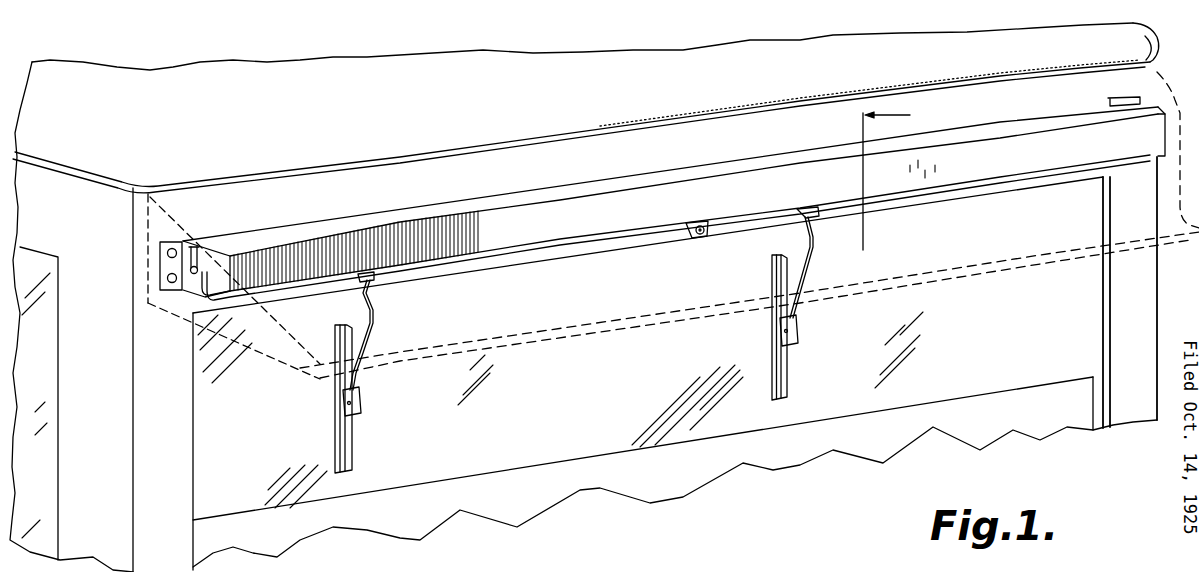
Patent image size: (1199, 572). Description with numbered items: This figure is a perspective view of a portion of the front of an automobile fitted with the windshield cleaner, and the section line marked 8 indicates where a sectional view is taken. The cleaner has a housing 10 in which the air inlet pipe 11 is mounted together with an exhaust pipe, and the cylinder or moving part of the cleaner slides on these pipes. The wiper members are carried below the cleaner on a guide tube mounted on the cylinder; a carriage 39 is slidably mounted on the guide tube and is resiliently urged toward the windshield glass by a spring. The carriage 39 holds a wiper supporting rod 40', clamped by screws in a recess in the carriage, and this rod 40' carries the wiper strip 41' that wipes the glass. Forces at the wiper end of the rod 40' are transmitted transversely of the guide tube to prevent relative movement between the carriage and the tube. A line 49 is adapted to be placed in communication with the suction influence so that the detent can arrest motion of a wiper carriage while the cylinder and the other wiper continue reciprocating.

The housing 10 is at (508, 203).
The air inlet pipe 11 is at (196, 263).
The line 49 is at (684, 232).
The carriage 39 is at (812, 214).
The rod 40' is at (602, 303).
The wiper strip 41' is at (585, 364).
The section line 8- 8 is at (888, 171).